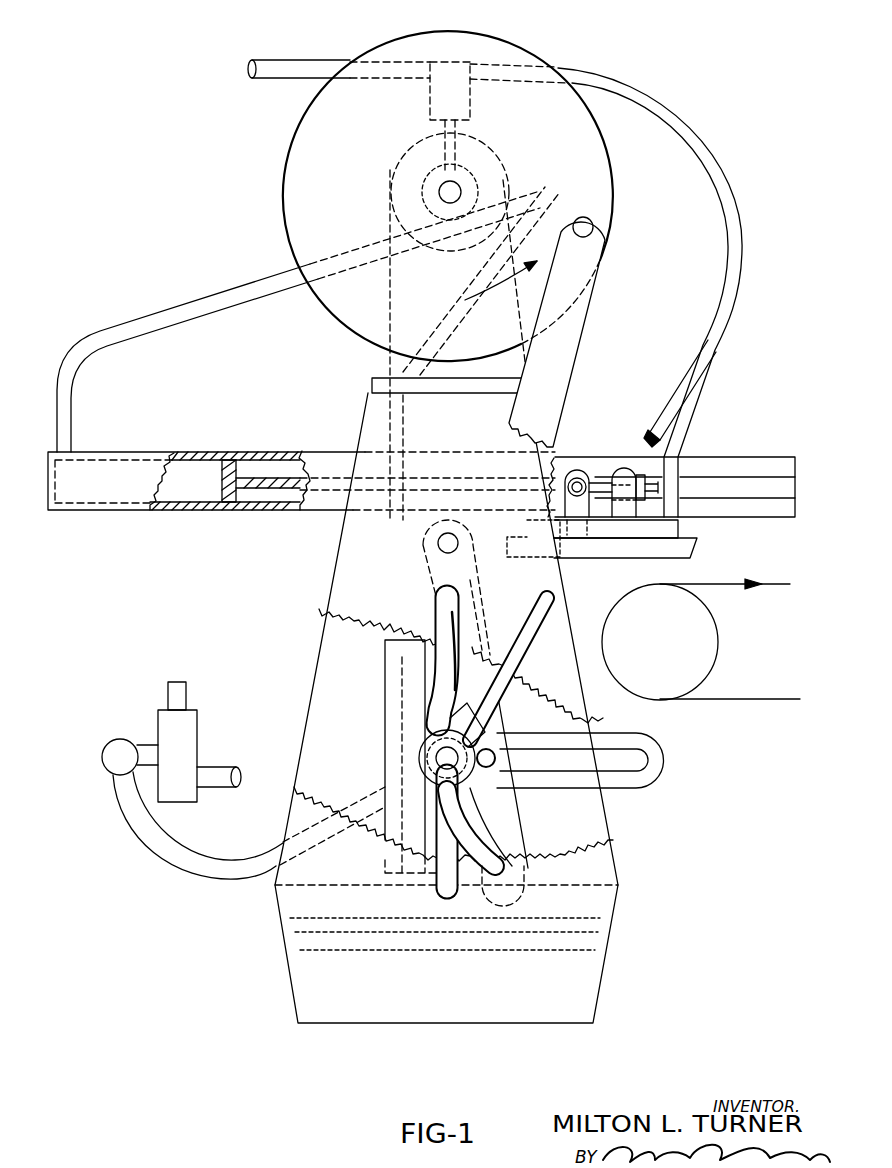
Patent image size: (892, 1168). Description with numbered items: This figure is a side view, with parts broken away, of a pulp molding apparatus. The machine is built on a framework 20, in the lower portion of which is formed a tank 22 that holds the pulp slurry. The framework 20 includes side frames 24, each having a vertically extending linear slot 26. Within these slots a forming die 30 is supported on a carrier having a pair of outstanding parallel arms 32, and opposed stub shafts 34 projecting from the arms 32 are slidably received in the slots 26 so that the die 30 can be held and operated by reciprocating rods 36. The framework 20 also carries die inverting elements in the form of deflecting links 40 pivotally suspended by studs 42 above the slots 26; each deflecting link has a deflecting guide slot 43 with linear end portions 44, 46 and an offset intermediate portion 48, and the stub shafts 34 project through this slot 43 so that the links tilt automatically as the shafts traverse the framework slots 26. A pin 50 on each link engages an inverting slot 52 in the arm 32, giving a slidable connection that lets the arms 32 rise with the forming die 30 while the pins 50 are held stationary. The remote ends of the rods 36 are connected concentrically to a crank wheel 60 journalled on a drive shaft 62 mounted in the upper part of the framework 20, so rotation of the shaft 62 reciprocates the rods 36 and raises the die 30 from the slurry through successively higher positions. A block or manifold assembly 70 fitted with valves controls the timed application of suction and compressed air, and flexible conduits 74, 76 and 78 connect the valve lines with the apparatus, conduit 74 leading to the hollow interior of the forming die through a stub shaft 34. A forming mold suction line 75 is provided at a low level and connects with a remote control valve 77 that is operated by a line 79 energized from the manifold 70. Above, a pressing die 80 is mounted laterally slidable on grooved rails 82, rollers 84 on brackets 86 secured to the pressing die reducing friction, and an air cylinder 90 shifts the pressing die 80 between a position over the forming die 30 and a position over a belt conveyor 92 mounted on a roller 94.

The framework 20 is at (371, 385).
The tank 22 is at (293, 996).
The side frame 24 is at (345, 580).
The linear slot 26 is at (438, 595).
The forming die 30 is at (385, 655).
The arm 32 is at (660, 757).
The stub shaft 34 is at (436, 757).
The reciprocating rod 36 is at (570, 387).
The deflecting link 40 is at (490, 625).
The stud 42 is at (438, 543).
The deflecting guide slot 43 is at (503, 813).
The linear end portion 44 is at (510, 856).
The linear end portion 46 is at (477, 578).
The offset intermediate portion 48 is at (478, 784).
The pin 50 is at (490, 750).
The inverting slot 52 is at (612, 755).
The crank wheel 60 is at (614, 148).
The drive shaft 62 is at (444, 197).
The manifold 70 is at (472, 101).
The flexible conduit 74 is at (652, 432).
The forming mold suction line 75 is at (192, 870).
The flexible conduit 76 is at (703, 393).
The remote control valve 77 is at (158, 722).
The flexible conduit 78 is at (172, 312).
The line 79 is at (187, 690).
The pressing die 80 is at (695, 550).
The grooved rail 82 is at (773, 457).
The roller 84 is at (578, 481).
The bracket 86 is at (578, 512).
The air cylinder 90 is at (212, 452).
The belt conveyor 92 is at (724, 585).
The roller 94 is at (718, 660).